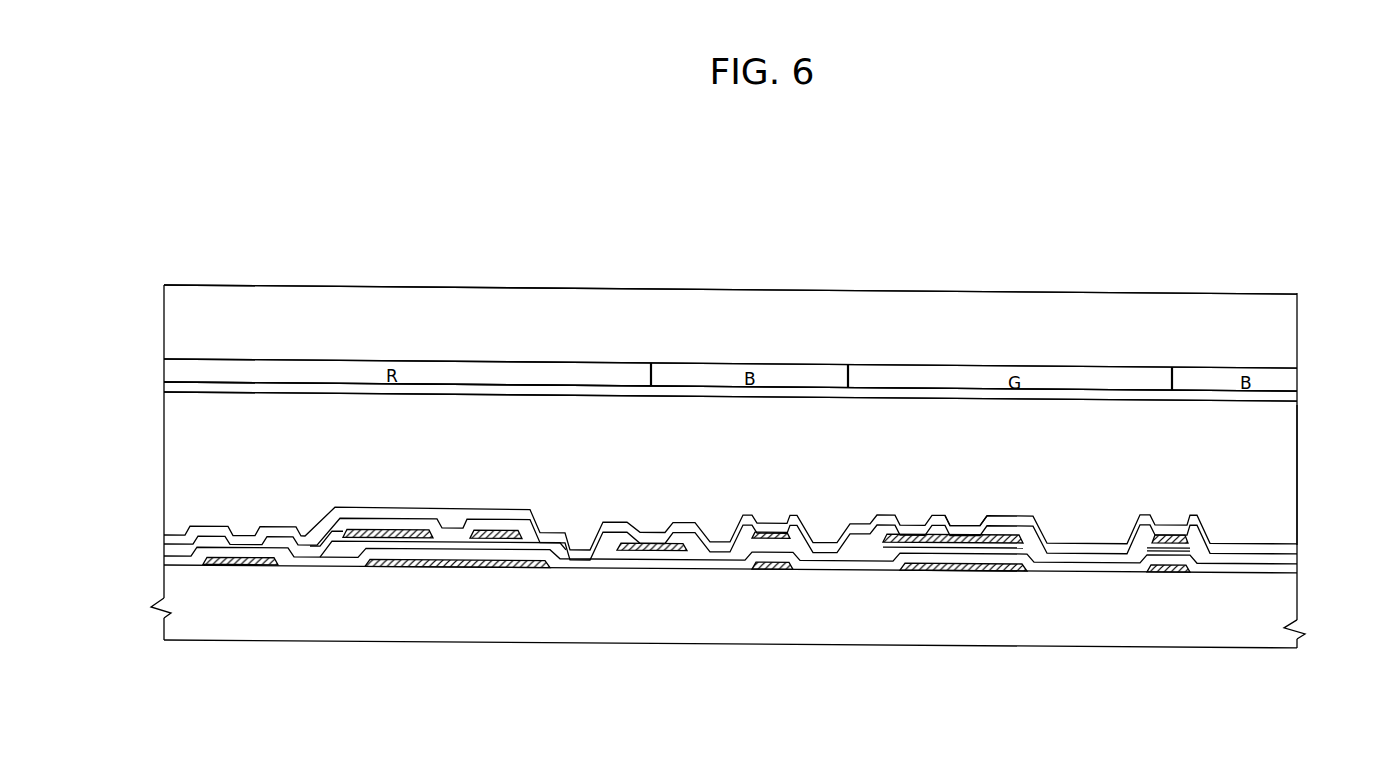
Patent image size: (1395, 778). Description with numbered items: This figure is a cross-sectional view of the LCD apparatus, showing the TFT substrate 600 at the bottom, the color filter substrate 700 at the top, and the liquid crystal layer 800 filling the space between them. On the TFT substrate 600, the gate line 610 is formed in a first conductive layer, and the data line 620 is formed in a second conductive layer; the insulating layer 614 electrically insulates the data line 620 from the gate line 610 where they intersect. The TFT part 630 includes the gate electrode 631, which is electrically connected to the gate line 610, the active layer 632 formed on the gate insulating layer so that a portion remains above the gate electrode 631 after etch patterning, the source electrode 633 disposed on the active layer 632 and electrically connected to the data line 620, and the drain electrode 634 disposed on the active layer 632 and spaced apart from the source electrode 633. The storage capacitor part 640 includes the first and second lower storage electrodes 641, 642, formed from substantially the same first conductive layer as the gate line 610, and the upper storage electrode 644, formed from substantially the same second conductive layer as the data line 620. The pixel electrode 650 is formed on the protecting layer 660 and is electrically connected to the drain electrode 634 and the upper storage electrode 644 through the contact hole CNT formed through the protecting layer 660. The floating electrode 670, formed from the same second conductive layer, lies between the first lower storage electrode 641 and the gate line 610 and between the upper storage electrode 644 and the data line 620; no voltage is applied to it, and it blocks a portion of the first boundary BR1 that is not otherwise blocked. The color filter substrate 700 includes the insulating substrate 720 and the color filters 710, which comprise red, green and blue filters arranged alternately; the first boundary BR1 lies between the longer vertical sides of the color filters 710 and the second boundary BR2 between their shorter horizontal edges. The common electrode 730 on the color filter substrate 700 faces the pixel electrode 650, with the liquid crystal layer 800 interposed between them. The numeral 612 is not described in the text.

The TFT substrate 600 is at (1306, 545).
The gate line 610 is at (245, 568).
The base substrate 612 is at (1273, 631).
The insulating layer 614 is at (1080, 571).
The data line 620 is at (1175, 538).
The TFT part 630 is at (438, 563).
The gate electrode 631 is at (448, 548).
The active layer 632 is at (407, 548).
The source electrode 633 is at (333, 551).
The drain electrode 634 is at (502, 546).
The storage capacitor part 640 is at (889, 486).
The first lower storage electrode 641 is at (965, 567).
The second lower storage electrode 642 is at (1158, 566).
The upper storage electrode 644 is at (888, 558).
The pixel electrode 650 is at (707, 558).
The protecting layer 660 is at (725, 566).
The floating electrode 670 is at (650, 547).
The color filter substrate 700 is at (1306, 293).
The color filters 710 is at (993, 386).
The insulating substrate 720 is at (1103, 305).
The common electrode 730 is at (918, 396).
The liquid crystal layer 800 is at (1297, 481).
The first boundary BR1 is at (651, 358).
The second boundary BR2 is at (848, 360).
The contact hole CNT is at (971, 518).